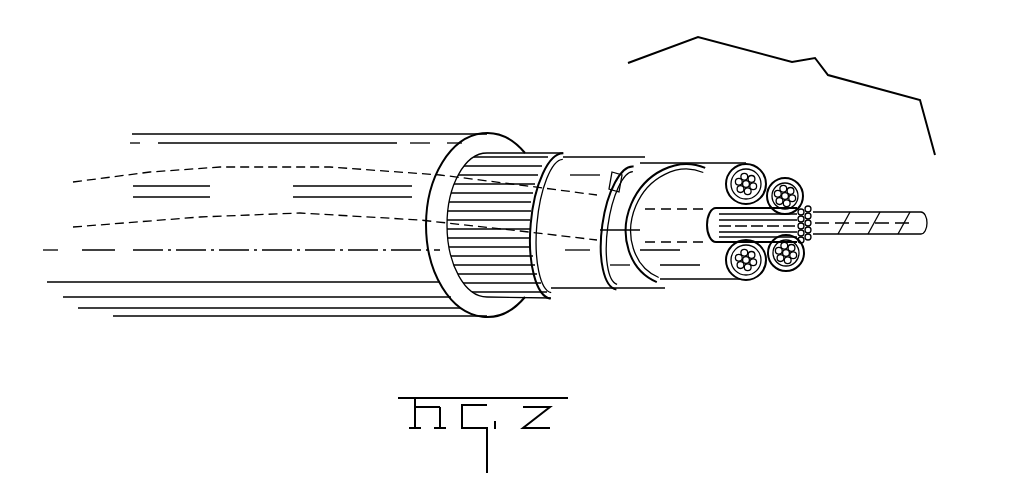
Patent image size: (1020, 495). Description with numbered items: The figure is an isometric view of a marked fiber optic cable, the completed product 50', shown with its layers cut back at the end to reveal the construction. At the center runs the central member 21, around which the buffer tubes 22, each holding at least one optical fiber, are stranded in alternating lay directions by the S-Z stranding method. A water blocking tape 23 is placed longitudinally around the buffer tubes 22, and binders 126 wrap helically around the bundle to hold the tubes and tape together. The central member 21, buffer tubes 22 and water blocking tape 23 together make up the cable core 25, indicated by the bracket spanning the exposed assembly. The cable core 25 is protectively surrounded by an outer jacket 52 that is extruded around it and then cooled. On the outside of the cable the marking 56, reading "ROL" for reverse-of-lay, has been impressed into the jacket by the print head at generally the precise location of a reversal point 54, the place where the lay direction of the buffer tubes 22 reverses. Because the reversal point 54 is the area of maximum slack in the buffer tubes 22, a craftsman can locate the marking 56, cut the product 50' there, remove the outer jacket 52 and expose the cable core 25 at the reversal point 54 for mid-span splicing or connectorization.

The completed product 50' is at (284, 175).
The marking 56 is at (212, 177).
The reversal point 54 is at (386, 168).
The outer jacket 52 is at (523, 152).
The water blocking tape 23 is at (615, 165).
The binders 126 is at (645, 175).
The buffer tubes 22 is at (703, 177).
The central member 21 is at (877, 220).
The cable core 25 is at (781, 92).